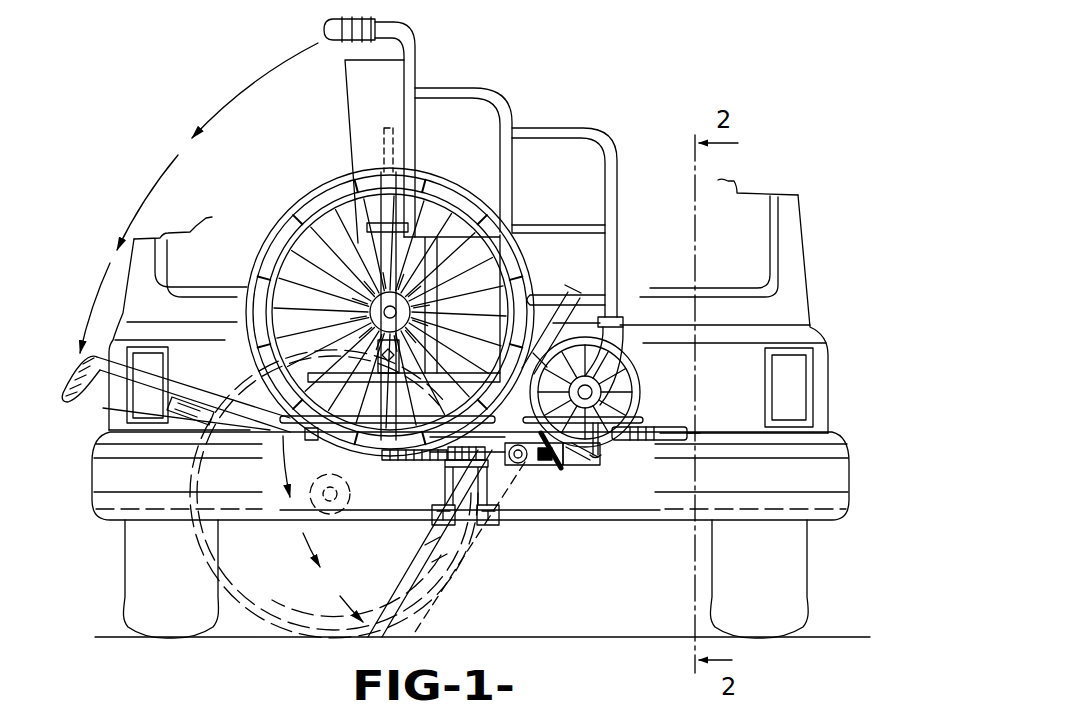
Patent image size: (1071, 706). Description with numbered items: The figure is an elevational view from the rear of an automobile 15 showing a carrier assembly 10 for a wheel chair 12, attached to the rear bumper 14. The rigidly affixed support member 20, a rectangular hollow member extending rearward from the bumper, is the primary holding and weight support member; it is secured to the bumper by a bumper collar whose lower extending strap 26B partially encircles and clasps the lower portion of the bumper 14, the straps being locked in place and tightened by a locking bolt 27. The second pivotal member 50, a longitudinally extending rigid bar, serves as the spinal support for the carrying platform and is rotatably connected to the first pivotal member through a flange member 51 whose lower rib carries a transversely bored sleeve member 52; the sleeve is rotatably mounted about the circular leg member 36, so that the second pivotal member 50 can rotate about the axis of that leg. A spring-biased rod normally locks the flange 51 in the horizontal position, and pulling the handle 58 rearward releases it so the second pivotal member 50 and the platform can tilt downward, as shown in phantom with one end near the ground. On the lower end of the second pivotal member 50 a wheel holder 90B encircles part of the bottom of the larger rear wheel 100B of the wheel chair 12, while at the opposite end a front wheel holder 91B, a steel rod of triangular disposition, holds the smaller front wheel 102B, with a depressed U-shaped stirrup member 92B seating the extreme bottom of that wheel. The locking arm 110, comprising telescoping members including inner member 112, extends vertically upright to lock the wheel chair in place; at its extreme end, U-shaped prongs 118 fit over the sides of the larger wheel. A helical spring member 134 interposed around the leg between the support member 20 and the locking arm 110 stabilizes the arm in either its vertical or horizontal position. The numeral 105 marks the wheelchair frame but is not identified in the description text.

The carrier assembly 10 is at (559, 532).
The wheel chair 12 is at (335, 139).
The rear bumper 14 is at (823, 516).
The automobile 15 is at (809, 306).
The rigidly affixed support member 20 is at (441, 463).
The lower extending strap 26B is at (486, 526).
The locking bolt 27 is at (488, 499).
The circular leg member 36 is at (498, 458).
The second pivotal member 50 is at (421, 585).
The flange member 51 is at (558, 467).
The bored sleeve member 52 is at (536, 468).
The handle 58 is at (553, 460).
The wheel holder 90B is at (259, 396).
The front wheel holder 91B is at (637, 423).
The U-shaped stirrup member 92B is at (584, 458).
The larger rear wheel 100B is at (316, 206).
The smaller front wheel 102B is at (620, 372).
The wheelchair frame 105 is at (495, 81).
The locking arm 110 is at (380, 263).
The inner telescoping member 112 is at (378, 362).
The prongs holder 118 is at (388, 161).
The helical spring member 134 is at (417, 461).